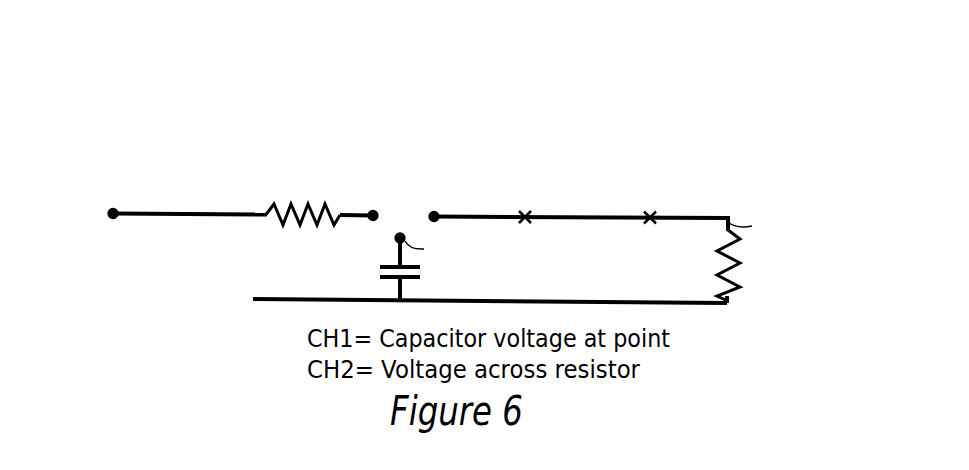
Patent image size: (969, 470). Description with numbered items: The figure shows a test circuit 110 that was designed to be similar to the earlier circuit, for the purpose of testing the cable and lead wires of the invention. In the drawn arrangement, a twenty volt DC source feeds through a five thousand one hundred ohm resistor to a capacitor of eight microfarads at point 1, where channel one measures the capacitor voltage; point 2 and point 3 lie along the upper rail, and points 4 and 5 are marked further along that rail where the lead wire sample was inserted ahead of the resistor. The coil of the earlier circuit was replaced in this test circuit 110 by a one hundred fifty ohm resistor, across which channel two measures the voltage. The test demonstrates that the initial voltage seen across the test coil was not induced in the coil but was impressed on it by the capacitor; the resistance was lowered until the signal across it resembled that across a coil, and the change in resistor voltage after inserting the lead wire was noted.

The test circuit 110 is at (472, 146).
The capacitor voltage measurement point 1 is at (426, 262).
The circuit point 2 is at (374, 203).
The circuit point 3 is at (435, 205).
The circuit point 4 is at (525, 206).
The circuit point 5 is at (650, 206).